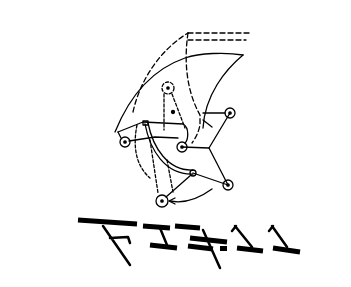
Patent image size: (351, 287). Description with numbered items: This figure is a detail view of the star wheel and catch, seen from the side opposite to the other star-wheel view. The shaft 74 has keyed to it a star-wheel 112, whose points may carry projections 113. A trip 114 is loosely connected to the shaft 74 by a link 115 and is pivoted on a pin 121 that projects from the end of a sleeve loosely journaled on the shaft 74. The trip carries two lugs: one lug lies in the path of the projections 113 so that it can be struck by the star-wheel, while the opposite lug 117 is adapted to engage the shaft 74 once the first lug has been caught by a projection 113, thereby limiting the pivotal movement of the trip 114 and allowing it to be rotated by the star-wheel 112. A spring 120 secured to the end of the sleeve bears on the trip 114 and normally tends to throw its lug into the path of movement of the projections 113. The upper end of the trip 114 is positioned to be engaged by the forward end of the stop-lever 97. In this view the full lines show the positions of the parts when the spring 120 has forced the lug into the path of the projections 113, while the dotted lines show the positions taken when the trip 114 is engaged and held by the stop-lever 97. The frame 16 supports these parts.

The frame 16 is at (117, 132).
The shaft 74 is at (190, 149).
The stop lever 97 is at (250, 33).
The star-wheel 112 is at (210, 166).
The projections 113 is at (236, 113).
The trip 114 is at (203, 77).
The link 115 is at (150, 147).
The lug 117 is at (192, 145).
The spring 120 is at (169, 192).
The pin 121 is at (174, 111).